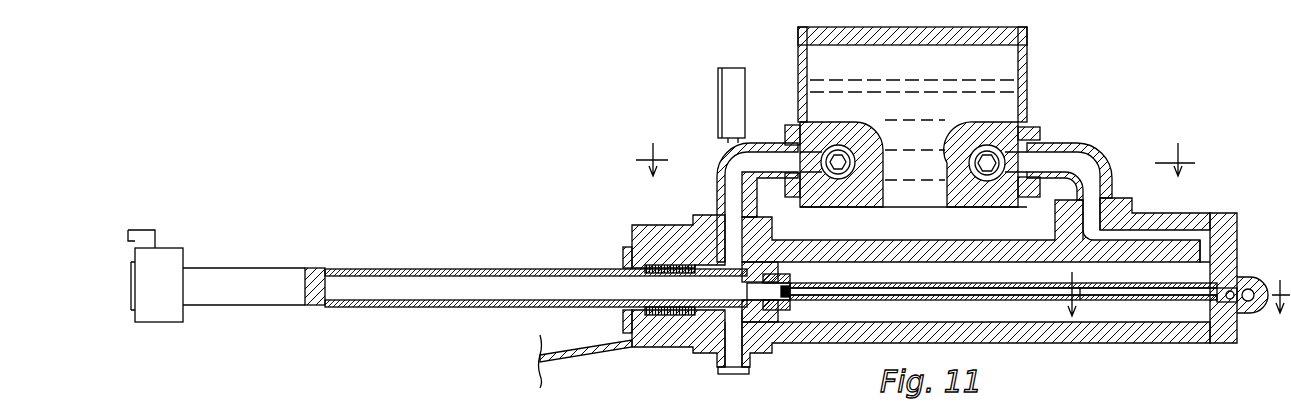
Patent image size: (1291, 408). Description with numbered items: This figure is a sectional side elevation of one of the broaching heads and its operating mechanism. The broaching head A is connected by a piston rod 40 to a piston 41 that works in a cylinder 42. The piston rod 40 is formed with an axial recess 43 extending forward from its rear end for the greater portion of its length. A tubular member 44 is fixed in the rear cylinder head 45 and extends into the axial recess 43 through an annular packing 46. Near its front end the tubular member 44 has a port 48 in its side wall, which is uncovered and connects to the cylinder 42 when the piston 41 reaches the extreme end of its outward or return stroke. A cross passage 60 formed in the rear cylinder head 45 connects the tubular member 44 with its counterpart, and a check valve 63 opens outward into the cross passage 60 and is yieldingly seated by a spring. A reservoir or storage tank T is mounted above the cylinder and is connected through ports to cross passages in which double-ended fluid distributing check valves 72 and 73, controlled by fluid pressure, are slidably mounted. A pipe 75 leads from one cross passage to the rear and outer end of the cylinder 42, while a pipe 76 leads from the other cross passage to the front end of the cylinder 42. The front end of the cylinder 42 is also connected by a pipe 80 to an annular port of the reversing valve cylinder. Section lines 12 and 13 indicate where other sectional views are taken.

The broaching head A is at (166, 302).
The piston rod 40 is at (266, 278).
The axial recess 43 is at (394, 278).
The cylinder 42 is at (905, 262).
The rear cylinder head 45 is at (1222, 340).
The pipe 80 is at (731, 368).
The piston 41 is at (770, 264).
The annular packing 46 is at (790, 306).
The port 48 is at (792, 286).
The tubular member 44 is at (968, 290).
The check valve 63 is at (1233, 310).
The cross passage 60 is at (1250, 290).
The section line 13— 13 is at (1179, 304).
The section line 12— 12 is at (916, 169).
The pipe 76 is at (717, 187).
The reservoir or storage tank T is at (1030, 62).
The fluid distributing check valve 72 is at (839, 154).
The fluid distributing check valve 73 is at (980, 158).
The pipe 75 is at (1062, 166).